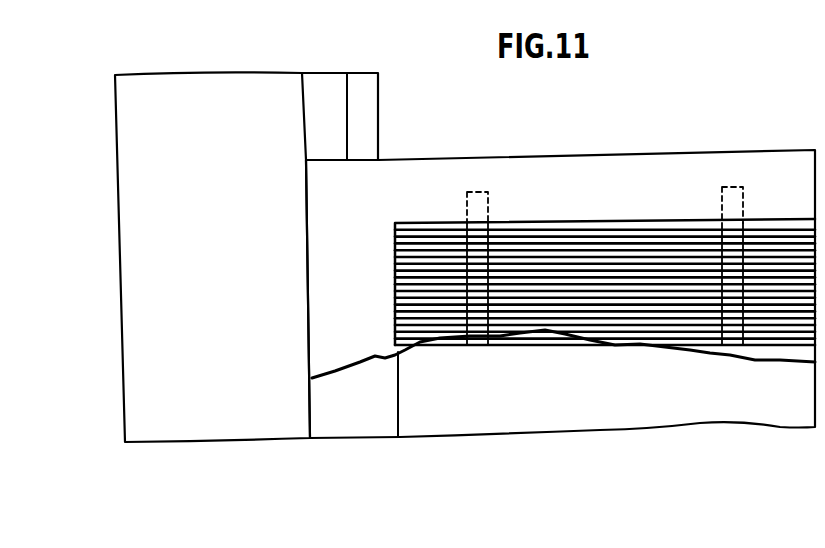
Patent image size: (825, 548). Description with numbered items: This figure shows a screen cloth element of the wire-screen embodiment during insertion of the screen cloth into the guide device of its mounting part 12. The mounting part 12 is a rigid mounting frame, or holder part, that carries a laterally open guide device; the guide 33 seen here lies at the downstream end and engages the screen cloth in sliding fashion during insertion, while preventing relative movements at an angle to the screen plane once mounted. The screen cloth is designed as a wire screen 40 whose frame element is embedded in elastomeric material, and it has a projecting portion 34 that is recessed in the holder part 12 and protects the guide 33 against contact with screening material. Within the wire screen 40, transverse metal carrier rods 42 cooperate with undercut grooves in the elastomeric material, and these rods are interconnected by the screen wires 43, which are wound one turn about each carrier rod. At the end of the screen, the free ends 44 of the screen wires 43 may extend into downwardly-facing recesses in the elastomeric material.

The mounting part 12 is at (205, 68).
The guide 33 is at (323, 92).
The projecting portion 34 is at (326, 203).
The wire screen 40 is at (526, 260).
The carrier rods 42 is at (745, 196).
The screen wires 43 is at (592, 224).
The free ends 44 is at (410, 236).